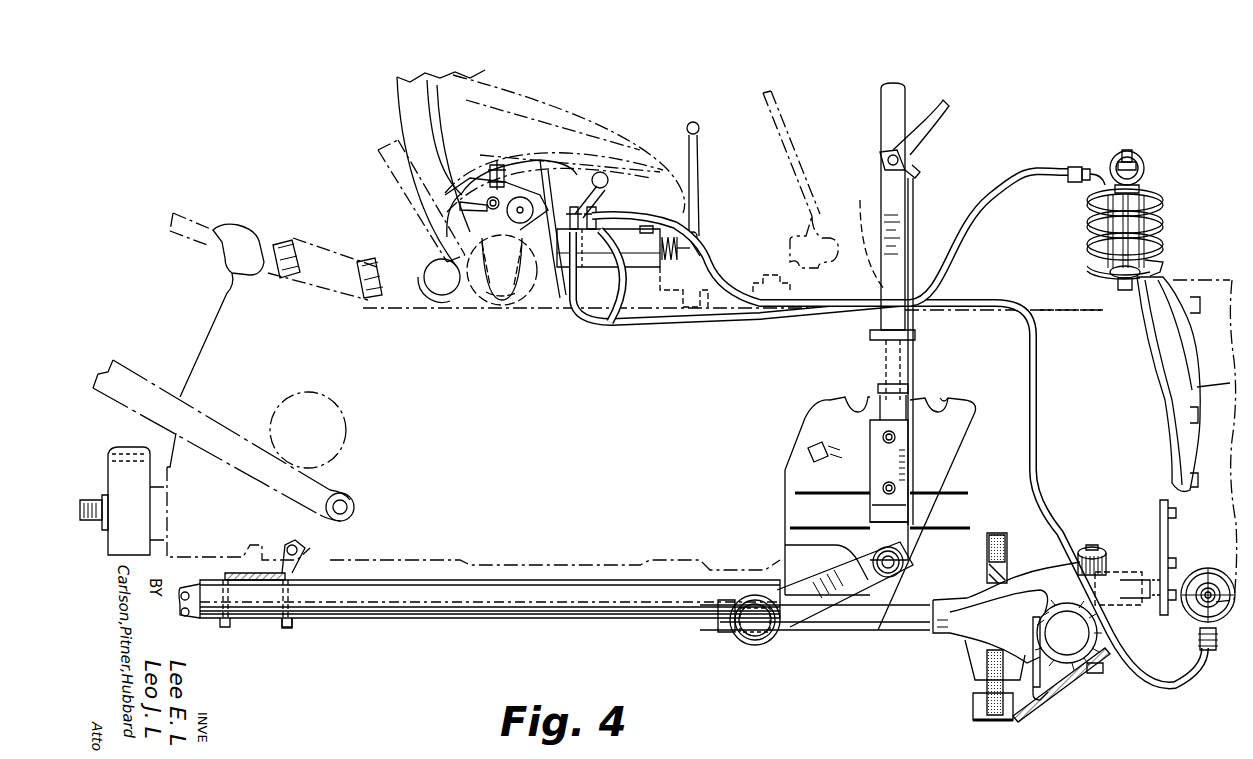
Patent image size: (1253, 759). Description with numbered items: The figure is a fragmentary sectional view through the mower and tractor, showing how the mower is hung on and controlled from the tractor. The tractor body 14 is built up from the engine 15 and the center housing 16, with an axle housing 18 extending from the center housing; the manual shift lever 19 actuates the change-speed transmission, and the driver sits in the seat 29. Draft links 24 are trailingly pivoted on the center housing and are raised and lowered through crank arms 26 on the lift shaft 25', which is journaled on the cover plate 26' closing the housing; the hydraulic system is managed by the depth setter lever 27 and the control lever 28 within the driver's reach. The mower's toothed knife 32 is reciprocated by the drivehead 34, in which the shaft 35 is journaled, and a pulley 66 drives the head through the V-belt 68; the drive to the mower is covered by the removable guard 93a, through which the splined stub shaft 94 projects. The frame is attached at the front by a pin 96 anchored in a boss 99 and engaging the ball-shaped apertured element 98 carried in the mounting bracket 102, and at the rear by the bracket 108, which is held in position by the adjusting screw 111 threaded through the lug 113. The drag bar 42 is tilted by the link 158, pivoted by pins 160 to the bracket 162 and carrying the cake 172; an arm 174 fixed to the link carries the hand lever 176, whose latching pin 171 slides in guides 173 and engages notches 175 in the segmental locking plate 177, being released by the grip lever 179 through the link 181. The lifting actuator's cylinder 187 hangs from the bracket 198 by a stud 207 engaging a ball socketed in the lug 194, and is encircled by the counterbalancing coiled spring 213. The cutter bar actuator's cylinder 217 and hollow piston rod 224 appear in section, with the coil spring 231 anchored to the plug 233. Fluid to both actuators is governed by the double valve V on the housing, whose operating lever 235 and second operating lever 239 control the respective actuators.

The body 14 is at (1069, 300).
The engine 15 is at (1218, 280).
The center housing 16 is at (212, 322).
The axle housing 18 is at (346, 410).
The manual shift lever 19 is at (818, 208).
The draft links 24 is at (125, 362).
The lift shaft 25' is at (440, 298).
The crank arms 26 is at (406, 201).
The cover plate 26' is at (287, 281).
The depth setter lever 27 is at (497, 163).
The control lever 28 is at (592, 172).
The seat 29 is at (632, 148).
The toothed knife 32 is at (520, 618).
The drivehead 34 is at (950, 598).
The shaft 35 is at (774, 522).
The drag bar 42 is at (1100, 660).
The pulley 66 is at (1007, 550).
The V-belt 68 is at (985, 690).
The guard 93a is at (126, 447).
The stub shaft 94 is at (88, 522).
The pin 96 is at (1182, 575).
The apertured connecting element 98 is at (1142, 575).
The boss 99 is at (1110, 560).
The mounting bracket 102 is at (1162, 528).
The bracket 108 is at (300, 628).
The adjusting screw 111 is at (298, 548).
The lug 113 is at (288, 572).
The link 158 is at (795, 628).
The pins 160 is at (886, 577).
The bracket 162 is at (785, 558).
The latching pin 171 is at (882, 355).
The cake 172 is at (752, 640).
The guides 173 is at (876, 384).
The arm 174 is at (912, 477).
The notches 175 is at (930, 405).
The hand lever 176 is at (872, 131).
The segmental locking plate 177 is at (958, 442).
The grip lever 179 is at (926, 146).
The link 181 is at (912, 232).
The cylinder 187 is at (1120, 297).
The lug 194 is at (1146, 168).
The bracket 198 is at (1234, 383).
The stud 207 is at (1131, 157).
The coiled spring 213 is at (1162, 210).
The cylinder 217 is at (1212, 580).
The hollow piston rod 224 is at (1218, 590).
The coil spring 231 is at (1218, 632).
The plug 233 is at (699, 164).
The operating lever 235 is at (664, 326).
The second valve operating lever 239 is at (708, 270).
The double valve V is at (642, 260).